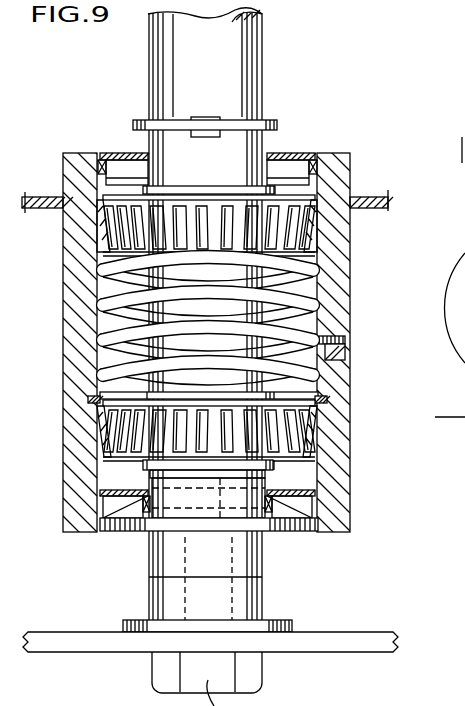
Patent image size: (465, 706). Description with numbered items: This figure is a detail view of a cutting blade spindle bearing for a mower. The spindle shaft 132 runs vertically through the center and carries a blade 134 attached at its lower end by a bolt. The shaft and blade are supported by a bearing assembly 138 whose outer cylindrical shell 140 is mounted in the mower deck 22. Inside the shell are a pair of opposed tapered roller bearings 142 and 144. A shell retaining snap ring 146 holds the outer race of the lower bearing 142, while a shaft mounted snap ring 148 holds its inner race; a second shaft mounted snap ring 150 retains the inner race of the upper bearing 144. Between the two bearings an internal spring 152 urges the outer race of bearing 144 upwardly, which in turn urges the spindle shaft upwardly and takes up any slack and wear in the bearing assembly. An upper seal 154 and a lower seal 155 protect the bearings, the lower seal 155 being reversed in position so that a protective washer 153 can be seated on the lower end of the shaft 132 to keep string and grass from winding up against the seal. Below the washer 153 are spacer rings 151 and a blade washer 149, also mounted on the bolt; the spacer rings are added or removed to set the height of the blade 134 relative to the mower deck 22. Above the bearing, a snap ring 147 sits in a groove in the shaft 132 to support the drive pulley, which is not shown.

The spindle shaft 132 is at (250, 68).
The snap ring 147 is at (143, 120).
The tapered roller bearing 144 is at (134, 210).
The second shaft mounted snap ring 150 is at (278, 188).
The upper seal 154 is at (312, 156).
The mower deck 22 is at (375, 196).
The outer cylindrical shell 140 is at (347, 252).
The internal spring 152 is at (318, 309).
The shell retaining snap ring 146 is at (330, 398).
The bearing assembly 138 is at (362, 446).
The tapered roller bearing 142 is at (282, 452).
The lower seal 155 is at (282, 500).
The shaft mounted snap ring 148 is at (118, 523).
The spacer rings 151 is at (152, 590).
The protective washer 153 is at (205, 524).
The blade washer 149 is at (280, 619).
The blade 134 is at (377, 632).